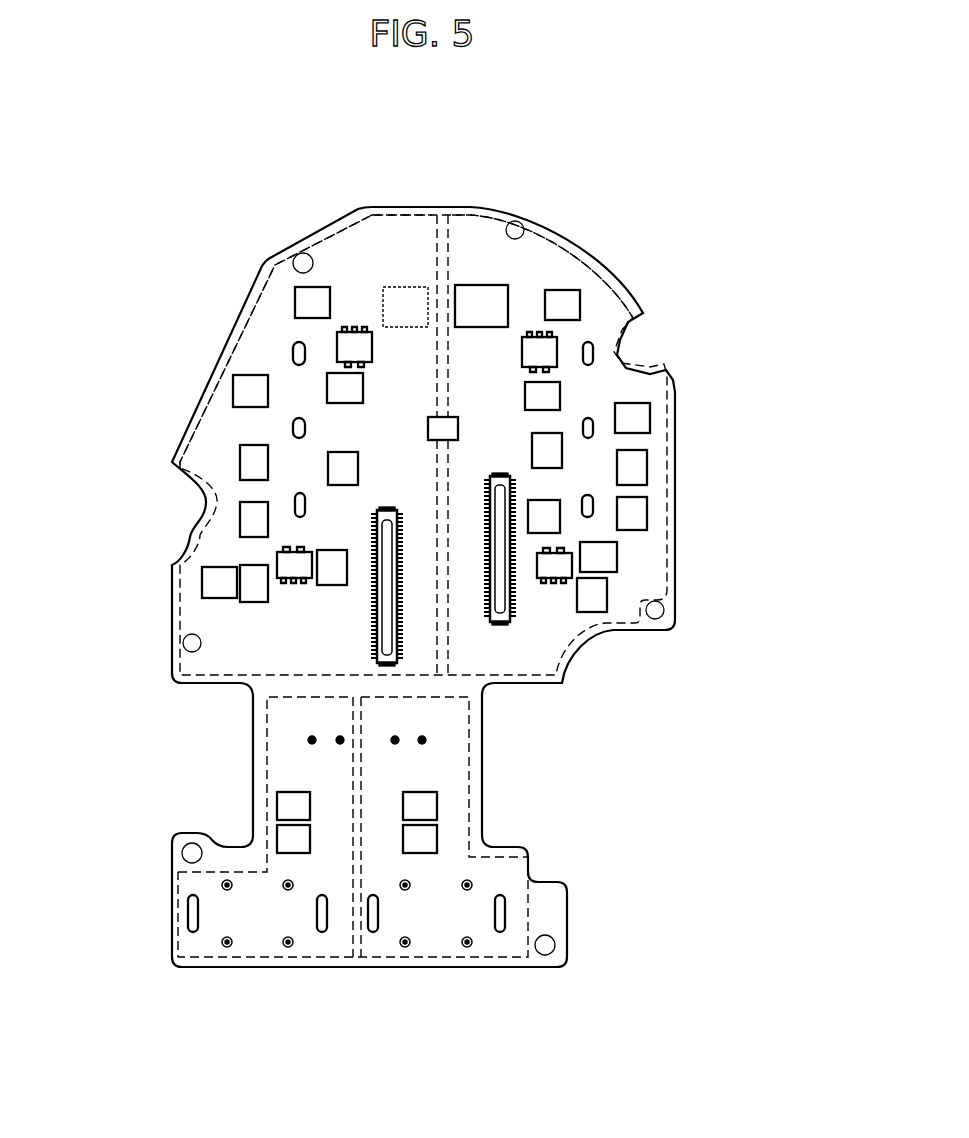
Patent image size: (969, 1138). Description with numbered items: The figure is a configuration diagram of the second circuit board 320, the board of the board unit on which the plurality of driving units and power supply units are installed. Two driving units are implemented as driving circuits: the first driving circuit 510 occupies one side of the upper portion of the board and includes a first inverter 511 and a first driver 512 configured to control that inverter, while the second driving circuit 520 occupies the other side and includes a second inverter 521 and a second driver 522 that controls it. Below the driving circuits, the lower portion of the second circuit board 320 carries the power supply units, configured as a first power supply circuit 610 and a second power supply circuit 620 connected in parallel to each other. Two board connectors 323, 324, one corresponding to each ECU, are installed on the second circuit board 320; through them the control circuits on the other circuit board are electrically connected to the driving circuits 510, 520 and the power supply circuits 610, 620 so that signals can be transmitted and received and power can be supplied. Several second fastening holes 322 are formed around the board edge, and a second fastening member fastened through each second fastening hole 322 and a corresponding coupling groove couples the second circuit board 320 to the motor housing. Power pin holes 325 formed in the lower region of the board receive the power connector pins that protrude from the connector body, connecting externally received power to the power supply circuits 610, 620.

The second circuit board 320 is at (443, 205).
The second fastening hole 322 is at (300, 258).
The board connector 323 is at (387, 633).
The board connector 324 is at (502, 612).
The power pin holes 325 is at (320, 910).
The first driving circuit 510 is at (250, 313).
The first inverter 511 is at (250, 390).
The first driver 512 is at (390, 285).
The second driving circuit 520 is at (600, 262).
The second inverter 521 is at (638, 418).
The second driver 522 is at (478, 300).
The first power supply circuit 610 is at (267, 960).
The second power supply circuit 620 is at (497, 960).